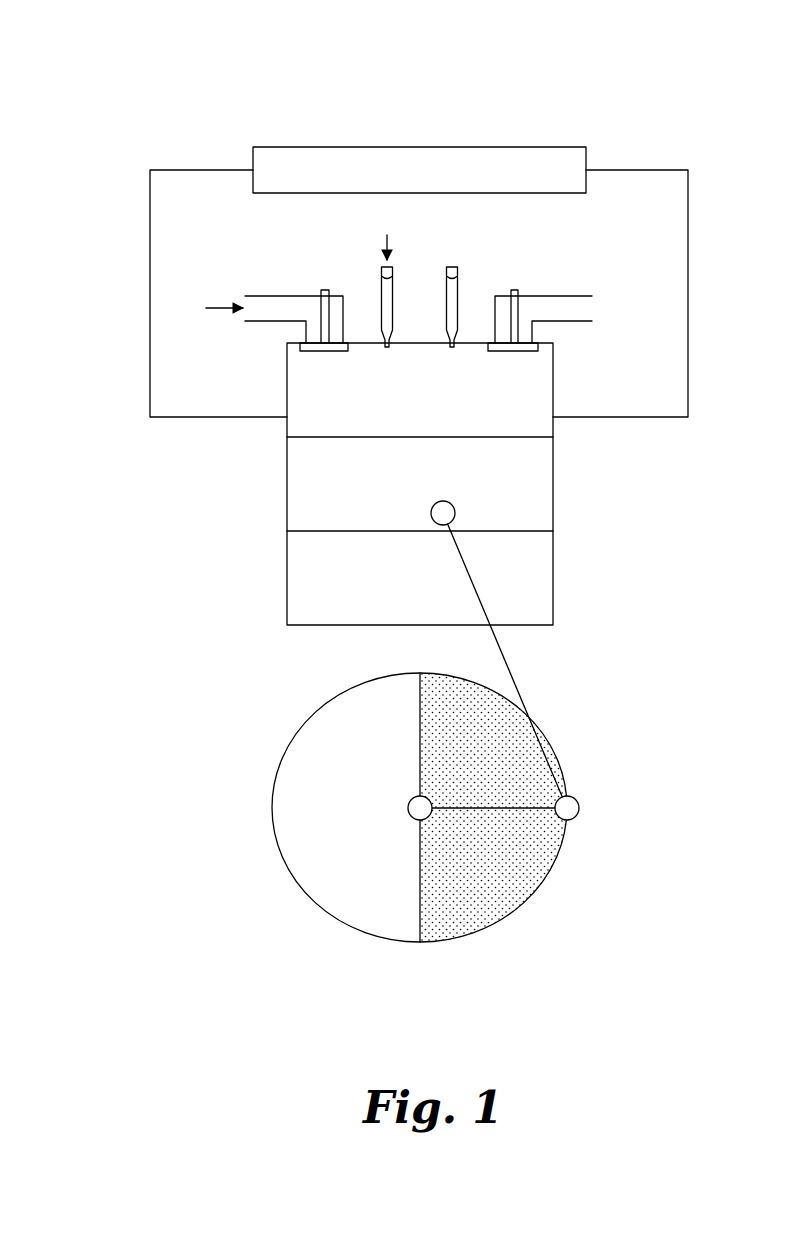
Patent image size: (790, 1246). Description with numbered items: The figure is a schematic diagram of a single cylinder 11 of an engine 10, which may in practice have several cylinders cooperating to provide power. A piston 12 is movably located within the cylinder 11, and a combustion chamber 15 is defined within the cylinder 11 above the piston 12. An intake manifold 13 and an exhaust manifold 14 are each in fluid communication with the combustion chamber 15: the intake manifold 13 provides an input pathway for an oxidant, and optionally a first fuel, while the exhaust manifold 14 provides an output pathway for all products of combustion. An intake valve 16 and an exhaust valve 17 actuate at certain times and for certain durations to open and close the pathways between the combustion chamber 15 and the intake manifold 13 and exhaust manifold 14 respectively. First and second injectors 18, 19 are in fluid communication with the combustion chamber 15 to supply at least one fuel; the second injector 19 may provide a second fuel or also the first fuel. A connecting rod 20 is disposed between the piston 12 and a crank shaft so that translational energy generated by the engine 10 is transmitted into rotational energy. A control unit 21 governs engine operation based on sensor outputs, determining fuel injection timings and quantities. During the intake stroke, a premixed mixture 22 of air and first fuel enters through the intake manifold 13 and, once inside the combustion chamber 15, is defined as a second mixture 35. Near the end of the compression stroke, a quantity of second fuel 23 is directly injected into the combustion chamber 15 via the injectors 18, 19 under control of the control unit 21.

The engine 10 is at (118, 60).
The cylinder 11 is at (300, 587).
The piston 12 is at (296, 504).
The intake manifold 13 is at (256, 296).
The exhaust manifold 14 is at (582, 321).
The combustion chamber 15 is at (306, 423).
The intake valve 16 is at (321, 290).
The exhaust valve 17 is at (517, 290).
The first injector 18 is at (382, 280).
The second injector 19 is at (452, 263).
The connecting rod 20 is at (520, 672).
The control unit 21 is at (256, 153).
The mixture 22 is at (213, 309).
The second fuel 23 is at (387, 237).
The second mixture 35 is at (410, 410).